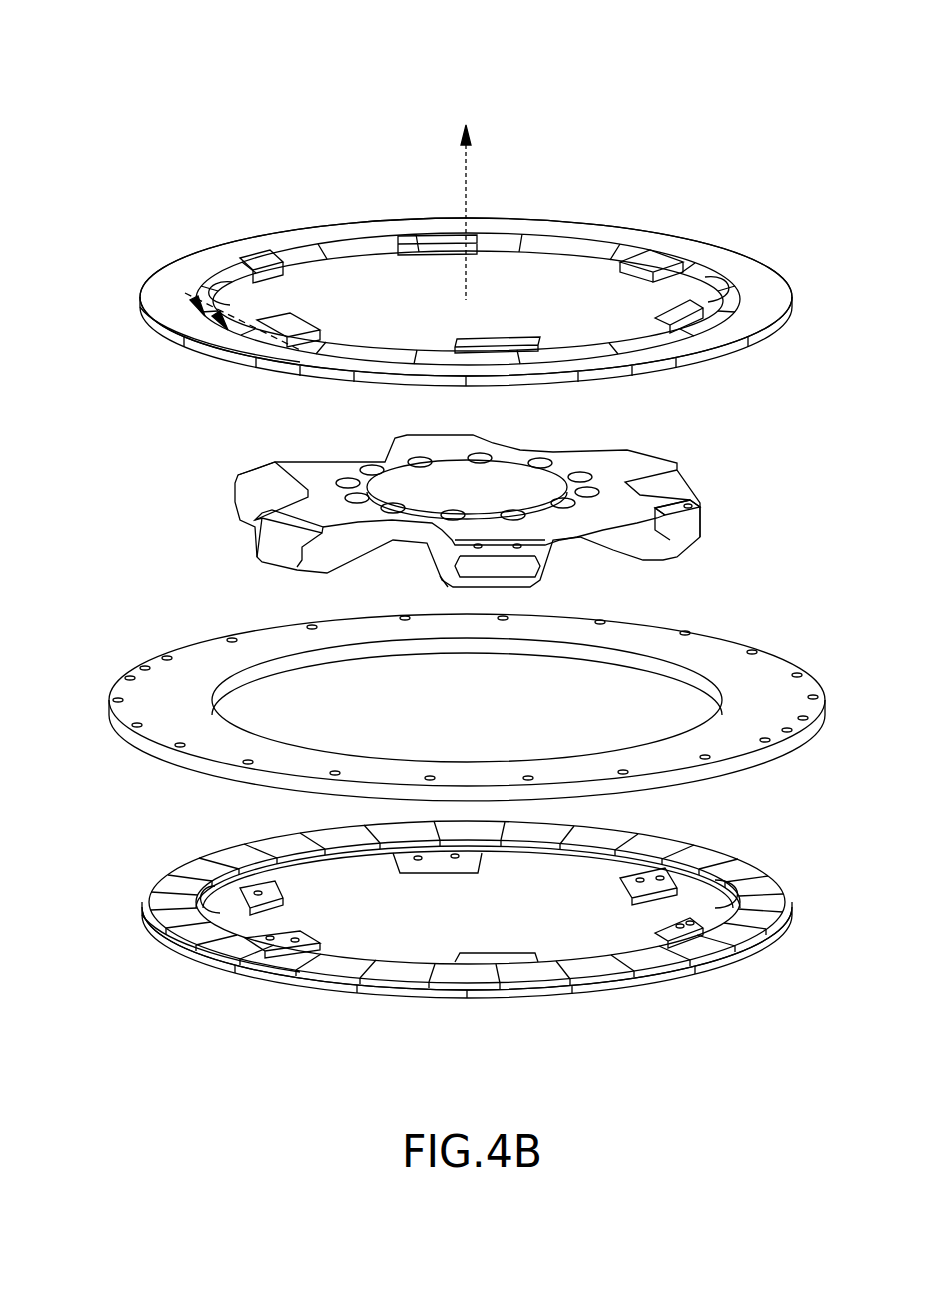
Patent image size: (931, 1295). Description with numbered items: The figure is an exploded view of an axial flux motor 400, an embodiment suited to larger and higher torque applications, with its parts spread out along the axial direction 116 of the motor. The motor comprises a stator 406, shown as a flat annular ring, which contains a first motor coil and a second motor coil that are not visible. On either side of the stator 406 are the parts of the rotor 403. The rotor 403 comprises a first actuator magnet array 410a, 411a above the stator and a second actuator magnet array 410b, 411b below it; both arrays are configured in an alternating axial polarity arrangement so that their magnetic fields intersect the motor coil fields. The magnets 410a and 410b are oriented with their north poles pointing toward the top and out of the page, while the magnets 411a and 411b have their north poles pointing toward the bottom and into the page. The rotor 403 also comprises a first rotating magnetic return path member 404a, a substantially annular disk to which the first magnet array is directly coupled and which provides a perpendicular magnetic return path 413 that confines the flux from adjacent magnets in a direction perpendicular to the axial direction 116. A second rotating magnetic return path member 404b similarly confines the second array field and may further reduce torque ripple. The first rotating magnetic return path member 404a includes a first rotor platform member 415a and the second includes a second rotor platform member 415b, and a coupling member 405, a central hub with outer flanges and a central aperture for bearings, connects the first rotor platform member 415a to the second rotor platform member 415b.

The axial flux motor 400 is at (170, 86).
The axial direction 116 is at (466, 194).
The rotor 403 is at (765, 276).
The first rotating magnetic return path member 404a is at (232, 240).
The second rotating magnetic return path member 404b is at (442, 990).
The coupling member 405 is at (678, 502).
The stator 406 is at (132, 694).
The actuator magnets of first actuator magnet array 410a is at (163, 340).
The actuator magnets of second actuator magnet array 410b is at (176, 960).
The actuator magnets of first actuator magnet array 411a is at (222, 358).
The actuator magnets of second actuator magnet array 411b is at (212, 950).
The perpendicular magnetic return path 413 is at (168, 292).
The first rotor platform member 415a is at (347, 228).
The second rotor platform member 415b is at (738, 960).